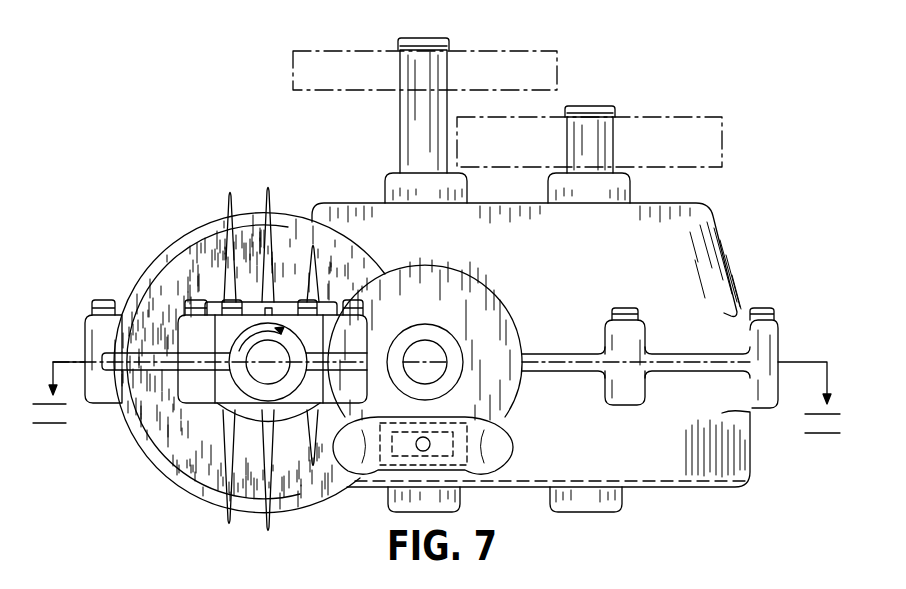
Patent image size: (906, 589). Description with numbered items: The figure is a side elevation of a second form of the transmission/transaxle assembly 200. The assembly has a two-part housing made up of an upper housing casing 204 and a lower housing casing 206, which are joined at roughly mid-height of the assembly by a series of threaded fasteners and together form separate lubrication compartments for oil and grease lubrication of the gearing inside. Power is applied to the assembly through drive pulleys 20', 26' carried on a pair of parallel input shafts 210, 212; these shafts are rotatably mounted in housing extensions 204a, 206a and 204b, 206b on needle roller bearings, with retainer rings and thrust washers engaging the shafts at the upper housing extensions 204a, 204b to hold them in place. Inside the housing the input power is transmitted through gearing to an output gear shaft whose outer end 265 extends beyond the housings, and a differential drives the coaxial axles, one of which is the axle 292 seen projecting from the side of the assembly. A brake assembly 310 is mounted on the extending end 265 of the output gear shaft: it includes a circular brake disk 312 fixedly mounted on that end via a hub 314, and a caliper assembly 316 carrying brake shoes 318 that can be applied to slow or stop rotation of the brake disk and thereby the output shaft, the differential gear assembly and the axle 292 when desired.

The transmission/transaxle assembly 200 is at (156, 190).
The drive pulley 20' is at (453, 54).
The drive pulley 26' is at (617, 124).
The input shaft 210 is at (405, 118).
The input shaft 212 is at (607, 150).
The upper housing casing 204 is at (702, 230).
The housing extension 204a is at (392, 193).
The housing extension 204b is at (630, 190).
The lower housing casing 206 is at (707, 478).
The housing extension 206a is at (388, 498).
The housing extension 206b is at (622, 505).
The axle 292 is at (262, 372).
The brake disk 312 is at (490, 310).
The hub 314 is at (452, 347).
The outer end of output gear shaft 265 is at (433, 373).
The brake assembly 310 is at (517, 433).
The caliper assembly 316 is at (482, 479).
The brake shoes 318 is at (463, 490).